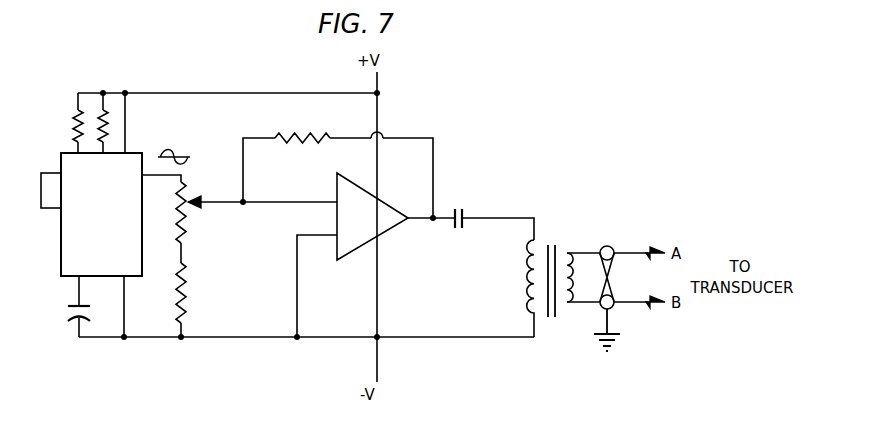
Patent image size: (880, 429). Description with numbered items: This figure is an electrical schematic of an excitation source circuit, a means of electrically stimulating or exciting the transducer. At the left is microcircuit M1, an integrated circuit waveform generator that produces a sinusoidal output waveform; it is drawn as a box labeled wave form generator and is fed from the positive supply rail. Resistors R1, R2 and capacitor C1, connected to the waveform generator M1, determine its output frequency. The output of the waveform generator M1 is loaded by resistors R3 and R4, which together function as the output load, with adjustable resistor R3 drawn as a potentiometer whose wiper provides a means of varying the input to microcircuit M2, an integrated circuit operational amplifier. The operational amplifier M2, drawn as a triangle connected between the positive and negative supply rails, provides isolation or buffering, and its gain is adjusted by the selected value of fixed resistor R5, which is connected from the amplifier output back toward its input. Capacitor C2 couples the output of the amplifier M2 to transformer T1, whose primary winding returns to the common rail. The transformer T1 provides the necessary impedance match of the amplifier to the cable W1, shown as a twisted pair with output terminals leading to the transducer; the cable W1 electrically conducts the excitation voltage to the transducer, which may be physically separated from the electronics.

The microcircuit U1 (integrated circuit waveform generator) M1 is at (101, 212).
The microcircuit U2 (integrated circuit operational amplifier) M2 is at (376, 255).
The resistor R1 is at (64, 123).
The resistor R2 is at (108, 123).
The adjustable resistor R3 is at (239, 219).
The resistor R4 is at (169, 300).
The fixed resistor R5 is at (338, 163).
The capacitor C1 is at (67, 306).
The capacitor C2 is at (494, 212).
The transformer T1 is at (563, 277).
The cable W1 is at (629, 285).